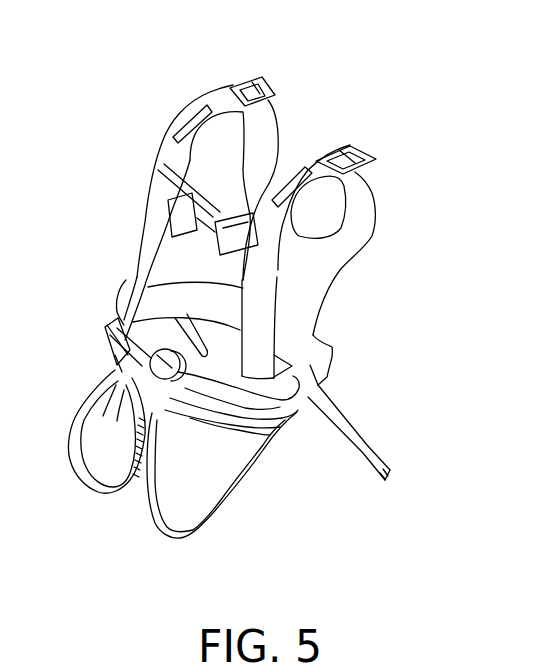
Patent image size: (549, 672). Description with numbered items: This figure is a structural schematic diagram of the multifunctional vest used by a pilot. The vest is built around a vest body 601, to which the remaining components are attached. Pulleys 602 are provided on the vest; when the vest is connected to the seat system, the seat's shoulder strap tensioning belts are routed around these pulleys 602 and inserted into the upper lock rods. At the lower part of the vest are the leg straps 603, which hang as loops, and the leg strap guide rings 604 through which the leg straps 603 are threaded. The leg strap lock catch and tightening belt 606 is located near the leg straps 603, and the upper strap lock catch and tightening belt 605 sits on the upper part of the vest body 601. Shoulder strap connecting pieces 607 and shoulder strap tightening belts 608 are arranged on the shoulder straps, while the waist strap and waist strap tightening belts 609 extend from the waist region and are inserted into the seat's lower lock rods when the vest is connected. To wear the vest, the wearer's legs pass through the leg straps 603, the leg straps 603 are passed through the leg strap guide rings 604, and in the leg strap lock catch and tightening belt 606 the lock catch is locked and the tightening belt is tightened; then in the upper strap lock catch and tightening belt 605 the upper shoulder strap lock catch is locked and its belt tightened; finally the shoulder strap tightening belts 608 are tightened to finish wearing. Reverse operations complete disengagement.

The vest body 601 is at (145, 263).
The pulleys 602 is at (370, 158).
The leg straps 603 is at (156, 525).
The leg strap guide rings 604 is at (333, 352).
The upper strap lock catch and tightening belt 605 is at (187, 190).
The leg strap lock catch and tightening belt 606 is at (152, 353).
The shoulder strap connecting pieces 607 is at (343, 157).
The shoulder strap tightening belts 608 is at (178, 110).
The waist strap and waist strap tightening belts 609 is at (367, 443).